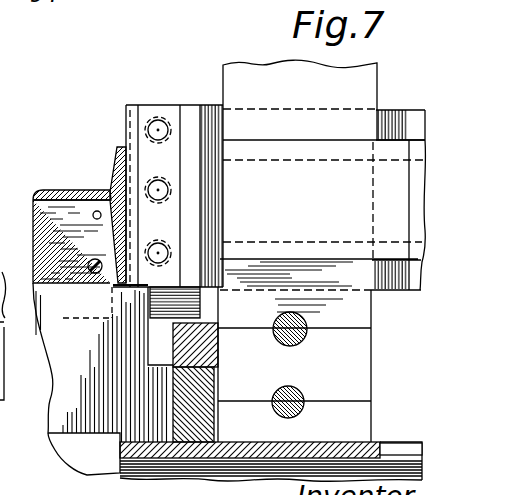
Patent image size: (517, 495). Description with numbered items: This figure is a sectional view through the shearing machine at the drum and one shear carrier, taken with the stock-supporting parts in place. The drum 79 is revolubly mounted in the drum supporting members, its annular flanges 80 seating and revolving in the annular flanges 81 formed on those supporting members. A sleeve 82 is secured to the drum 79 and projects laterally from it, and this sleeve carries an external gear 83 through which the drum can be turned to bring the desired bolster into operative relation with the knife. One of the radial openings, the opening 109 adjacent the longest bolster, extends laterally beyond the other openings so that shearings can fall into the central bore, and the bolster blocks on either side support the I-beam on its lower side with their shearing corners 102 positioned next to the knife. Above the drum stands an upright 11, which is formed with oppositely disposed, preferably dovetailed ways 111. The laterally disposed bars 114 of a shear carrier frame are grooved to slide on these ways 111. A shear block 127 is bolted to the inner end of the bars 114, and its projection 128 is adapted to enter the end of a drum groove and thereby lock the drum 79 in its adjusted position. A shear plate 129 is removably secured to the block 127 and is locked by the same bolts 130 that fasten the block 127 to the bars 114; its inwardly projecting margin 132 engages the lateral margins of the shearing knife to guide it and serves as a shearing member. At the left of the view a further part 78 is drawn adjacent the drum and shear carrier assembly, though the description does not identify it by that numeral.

The upright 11 is at (291, 93).
The way 111 is at (306, 228).
The bar 114 is at (432, 68).
The shear block 127 is at (152, 158).
The shear plate 129 is at (190, 155).
The bolt 130 is at (157, 177).
The housing block 78 is at (59, 190).
The shearing corner 102 is at (73, 243).
The inwardly projecting margin 132 is at (128, 281).
The projection 128 is at (192, 307).
The annular flange 81 is at (217, 353).
The annular flange 80 is at (212, 395).
The sleeve 82 is at (268, 445).
The external gear 83 is at (392, 447).
The opening 109 is at (101, 366).
The drum 79 is at (55, 392).